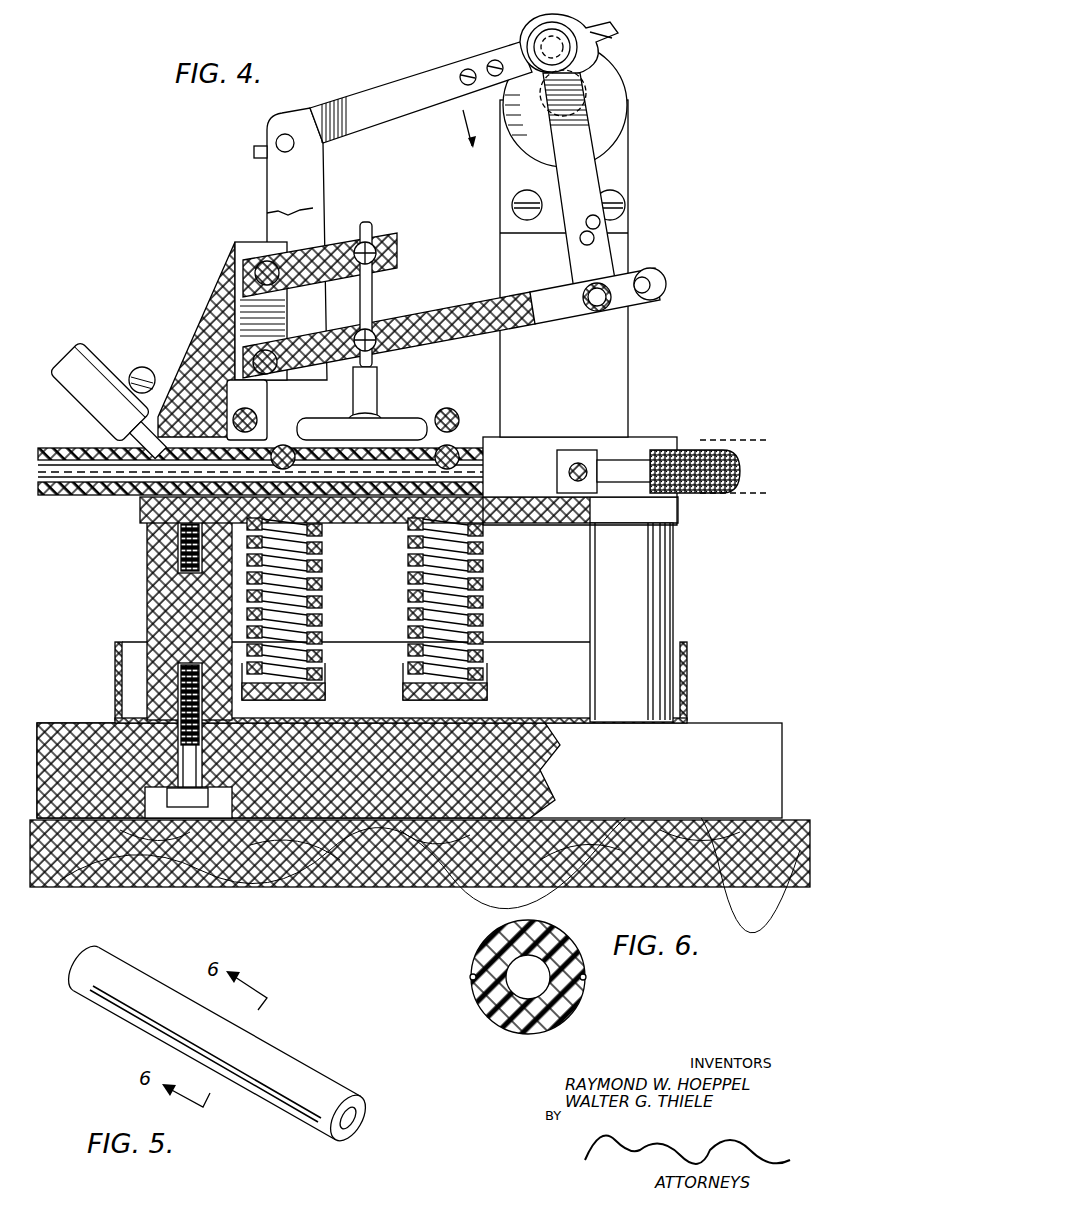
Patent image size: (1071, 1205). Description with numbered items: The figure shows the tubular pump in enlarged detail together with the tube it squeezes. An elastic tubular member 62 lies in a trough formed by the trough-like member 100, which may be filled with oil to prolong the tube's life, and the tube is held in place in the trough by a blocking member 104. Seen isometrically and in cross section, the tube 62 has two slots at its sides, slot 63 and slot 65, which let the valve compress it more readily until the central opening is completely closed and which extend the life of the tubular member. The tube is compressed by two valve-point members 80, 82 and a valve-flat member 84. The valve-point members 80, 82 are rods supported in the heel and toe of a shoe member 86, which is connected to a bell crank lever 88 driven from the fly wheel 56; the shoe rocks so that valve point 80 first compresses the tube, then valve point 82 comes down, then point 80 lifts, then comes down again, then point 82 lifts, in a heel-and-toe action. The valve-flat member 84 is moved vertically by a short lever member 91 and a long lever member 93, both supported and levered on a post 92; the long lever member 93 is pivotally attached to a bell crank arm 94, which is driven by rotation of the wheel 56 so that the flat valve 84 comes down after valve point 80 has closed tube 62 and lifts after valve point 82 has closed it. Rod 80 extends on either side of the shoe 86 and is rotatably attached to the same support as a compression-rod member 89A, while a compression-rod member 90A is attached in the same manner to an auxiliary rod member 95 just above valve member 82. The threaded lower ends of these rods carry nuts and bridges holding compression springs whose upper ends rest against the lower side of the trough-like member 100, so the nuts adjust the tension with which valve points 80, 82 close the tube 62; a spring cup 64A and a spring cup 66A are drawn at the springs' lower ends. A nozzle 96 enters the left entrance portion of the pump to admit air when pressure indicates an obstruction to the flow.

In FIG. 4, the fly wheel 56 is at (620, 88).
In FIG. 4, the elastic tubular member 62 is at (512, 447).
In FIG. 5, the elastic tubular member 62 is at (292, 1080).
In FIG. 6, the elastic tubular member 62 is at (508, 932).
In FIG. 5, the slot 63 is at (92, 992).
In FIG. 6, the slot 63 is at (475, 977).
In FIG. 4, the spring cup 64A is at (320, 652).
In FIG. 6, the slot 65 is at (583, 977).
In FIG. 4, the spring cup 66A is at (487, 552).
In FIG. 4, the valve-point member 80 is at (283, 445).
In FIG. 4, the valve-point member 82 is at (452, 445).
In FIG. 4, the valve-flat member 84 is at (407, 422).
In FIG. 4, the shoe member 86 is at (328, 297).
In FIG. 4, the bell crank lever 88 is at (388, 98).
In FIG. 4, the compression-rod member 89A is at (287, 605).
In FIG. 4, the compression-rod member 90A is at (475, 605).
In FIG. 4, the short lever member 91 is at (333, 247).
In FIG. 4, the post 92 is at (250, 245).
In FIG. 4, the long lever member 93 is at (455, 305).
In FIG. 4, the bell crank arm 94 is at (590, 173).
In FIG. 4, the auxiliary rod member 95 is at (448, 408).
In FIG. 4, the nozzle 96 is at (98, 362).
In FIG. 4, the trough-like member 100 is at (665, 440).
In FIG. 4, the blocking member 104 is at (573, 448).